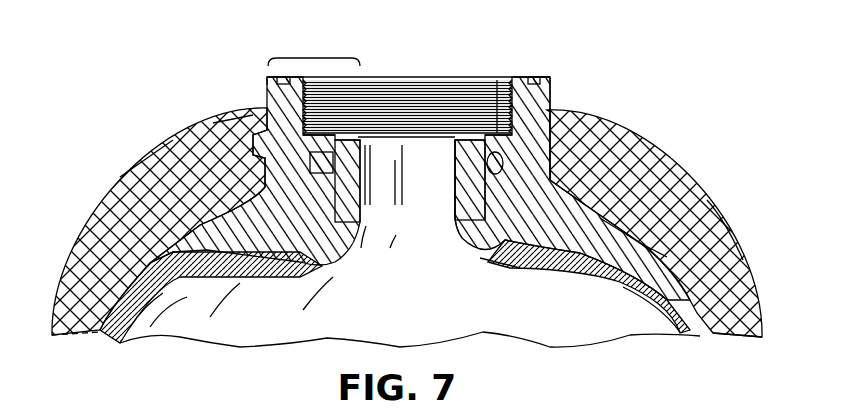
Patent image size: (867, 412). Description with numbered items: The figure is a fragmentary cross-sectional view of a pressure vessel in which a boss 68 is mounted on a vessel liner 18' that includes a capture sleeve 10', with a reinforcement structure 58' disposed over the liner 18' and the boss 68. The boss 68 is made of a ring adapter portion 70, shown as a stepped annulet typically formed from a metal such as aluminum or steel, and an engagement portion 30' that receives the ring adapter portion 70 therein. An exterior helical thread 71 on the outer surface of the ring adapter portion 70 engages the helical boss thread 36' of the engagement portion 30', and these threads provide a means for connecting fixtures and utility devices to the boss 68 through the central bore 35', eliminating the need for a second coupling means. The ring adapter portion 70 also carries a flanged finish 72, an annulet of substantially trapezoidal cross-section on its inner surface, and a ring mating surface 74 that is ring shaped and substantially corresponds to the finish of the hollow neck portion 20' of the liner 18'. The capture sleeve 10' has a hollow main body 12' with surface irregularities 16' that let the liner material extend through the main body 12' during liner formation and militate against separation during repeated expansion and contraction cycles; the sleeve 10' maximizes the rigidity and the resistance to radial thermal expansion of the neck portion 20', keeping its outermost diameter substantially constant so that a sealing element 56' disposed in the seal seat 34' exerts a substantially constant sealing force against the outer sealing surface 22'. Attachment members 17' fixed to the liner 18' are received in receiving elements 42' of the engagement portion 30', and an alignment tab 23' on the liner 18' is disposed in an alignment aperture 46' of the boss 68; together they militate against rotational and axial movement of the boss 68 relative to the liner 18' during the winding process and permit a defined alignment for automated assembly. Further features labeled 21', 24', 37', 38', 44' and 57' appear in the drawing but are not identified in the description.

The capture sleeve 10' is at (559, 188).
The hollow main body 12' is at (439, 177).
The surface irregularities 16' is at (454, 180).
The attachment members 17' is at (655, 198).
The vessel liner 18' is at (410, 293).
The hollow neck portion 20' is at (654, 223).
The axial bore 21' is at (406, 140).
The outer sealing surface 22' is at (162, 221).
The alignment tab 23' is at (136, 168).
The shoulder 24' is at (685, 213).
The engagement portion 30' is at (574, 87).
The seal seat 34' is at (607, 151).
The central bore 35' is at (408, 83).
The helical boss thread 36' is at (590, 104).
The top surface 37' is at (560, 53).
The corner notch 38' is at (243, 80).
The receiving elements 42' is at (458, 237).
The lower surface 44' is at (498, 267).
The alignment aperture 46' is at (241, 279).
The sealing element 56' is at (245, 171).
The recess 57' is at (525, 58).
The reinforcement structure 58' is at (730, 227).
The boss 68 is at (314, 49).
The ring adapter portion 70 is at (497, 128).
The exterior helical thread 71 is at (562, 138).
The flanged finish 72 is at (380, 133).
The ring mating surface 74 is at (250, 120).